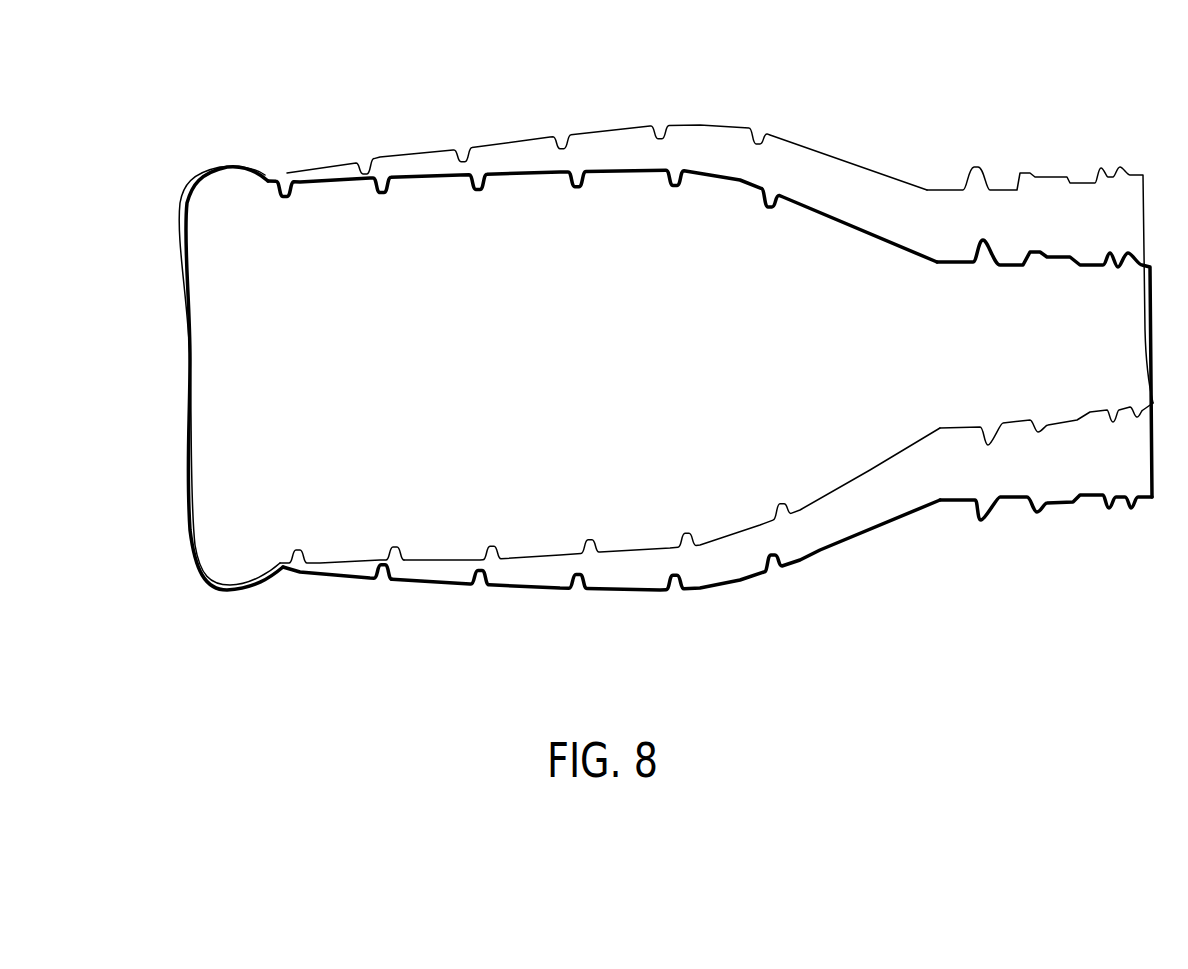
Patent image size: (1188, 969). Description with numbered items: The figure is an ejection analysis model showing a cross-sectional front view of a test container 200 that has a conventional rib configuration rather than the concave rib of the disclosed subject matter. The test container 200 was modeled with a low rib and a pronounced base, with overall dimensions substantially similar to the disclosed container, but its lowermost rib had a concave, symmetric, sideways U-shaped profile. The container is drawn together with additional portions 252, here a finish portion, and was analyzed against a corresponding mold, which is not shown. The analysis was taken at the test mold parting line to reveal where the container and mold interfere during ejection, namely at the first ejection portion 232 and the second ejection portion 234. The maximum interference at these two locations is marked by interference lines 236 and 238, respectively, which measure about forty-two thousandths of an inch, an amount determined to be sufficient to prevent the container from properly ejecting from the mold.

The test container 200 is at (805, 148).
The first ejection portion 232 is at (268, 175).
The second ejection portion 234 is at (287, 570).
The interference line 236 is at (265, 175).
The interference line 238 is at (283, 570).
The additional portions 252 is at (1060, 507).